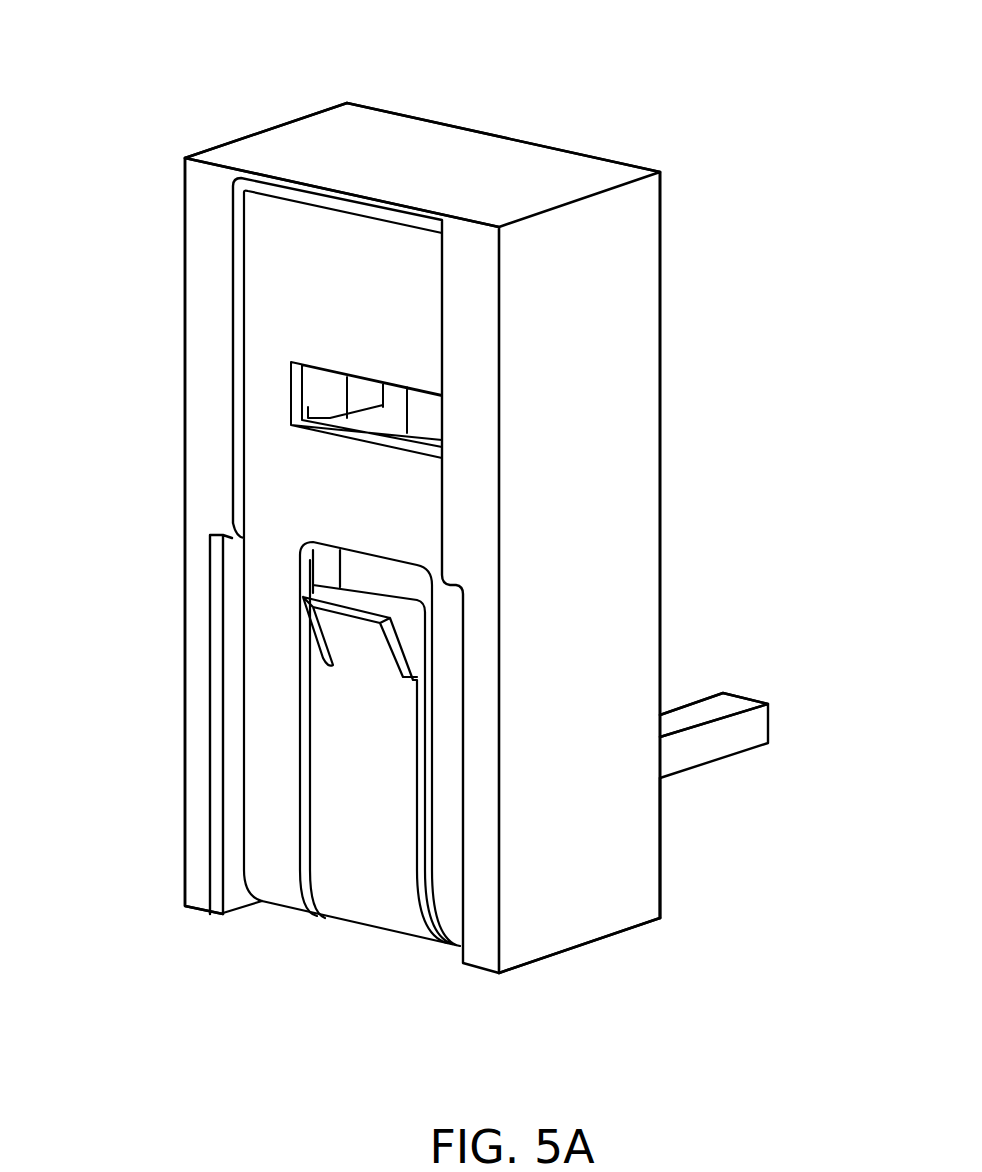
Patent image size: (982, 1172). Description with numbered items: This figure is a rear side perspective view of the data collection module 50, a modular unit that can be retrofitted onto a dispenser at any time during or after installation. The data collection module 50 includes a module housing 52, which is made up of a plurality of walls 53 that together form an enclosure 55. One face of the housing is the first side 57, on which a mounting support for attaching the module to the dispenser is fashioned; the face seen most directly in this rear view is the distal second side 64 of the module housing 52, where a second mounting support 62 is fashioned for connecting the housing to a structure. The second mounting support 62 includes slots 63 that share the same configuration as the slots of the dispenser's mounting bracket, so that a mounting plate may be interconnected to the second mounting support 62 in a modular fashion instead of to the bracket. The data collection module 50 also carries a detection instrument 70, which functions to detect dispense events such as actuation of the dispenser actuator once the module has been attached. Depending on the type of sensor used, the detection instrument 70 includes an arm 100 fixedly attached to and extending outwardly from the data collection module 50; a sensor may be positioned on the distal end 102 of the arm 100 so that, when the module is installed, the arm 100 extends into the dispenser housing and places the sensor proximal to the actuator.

The data collection module 50 is at (160, 244).
The module housing 52 is at (518, 163).
The walls 53 is at (379, 169).
The enclosure 55 is at (458, 142).
The first side 57 is at (693, 318).
The second mounting support 62 is at (233, 523).
The slots 63 is at (218, 491).
The second side 64 is at (170, 730).
The detection instrument 70 is at (692, 797).
The arm 100 is at (723, 743).
The distal end 102 is at (750, 688).